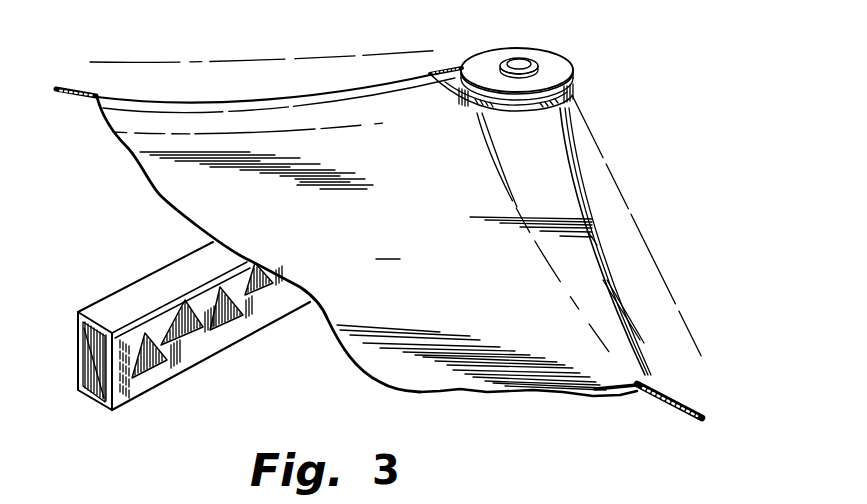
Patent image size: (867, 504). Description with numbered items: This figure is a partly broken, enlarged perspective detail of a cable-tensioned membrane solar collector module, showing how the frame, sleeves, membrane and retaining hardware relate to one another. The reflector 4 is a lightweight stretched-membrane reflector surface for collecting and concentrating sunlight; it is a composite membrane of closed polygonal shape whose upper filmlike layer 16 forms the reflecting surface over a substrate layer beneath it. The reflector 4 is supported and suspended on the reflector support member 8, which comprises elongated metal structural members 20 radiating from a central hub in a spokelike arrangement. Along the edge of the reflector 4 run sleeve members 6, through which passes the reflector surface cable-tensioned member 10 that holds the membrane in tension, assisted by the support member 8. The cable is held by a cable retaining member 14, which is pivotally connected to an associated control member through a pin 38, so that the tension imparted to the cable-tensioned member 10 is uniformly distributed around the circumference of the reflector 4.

The reflector 4 is at (548, 402).
The sleeve members 6 is at (645, 367).
The reflector support member 8 is at (185, 326).
The reflector surface cable-tensioned member 10 is at (704, 400).
The cable retaining member 14 is at (566, 66).
The upper filmlike layer 16 is at (404, 222).
The structural members 20 is at (201, 332).
The pin 38 is at (521, 62).